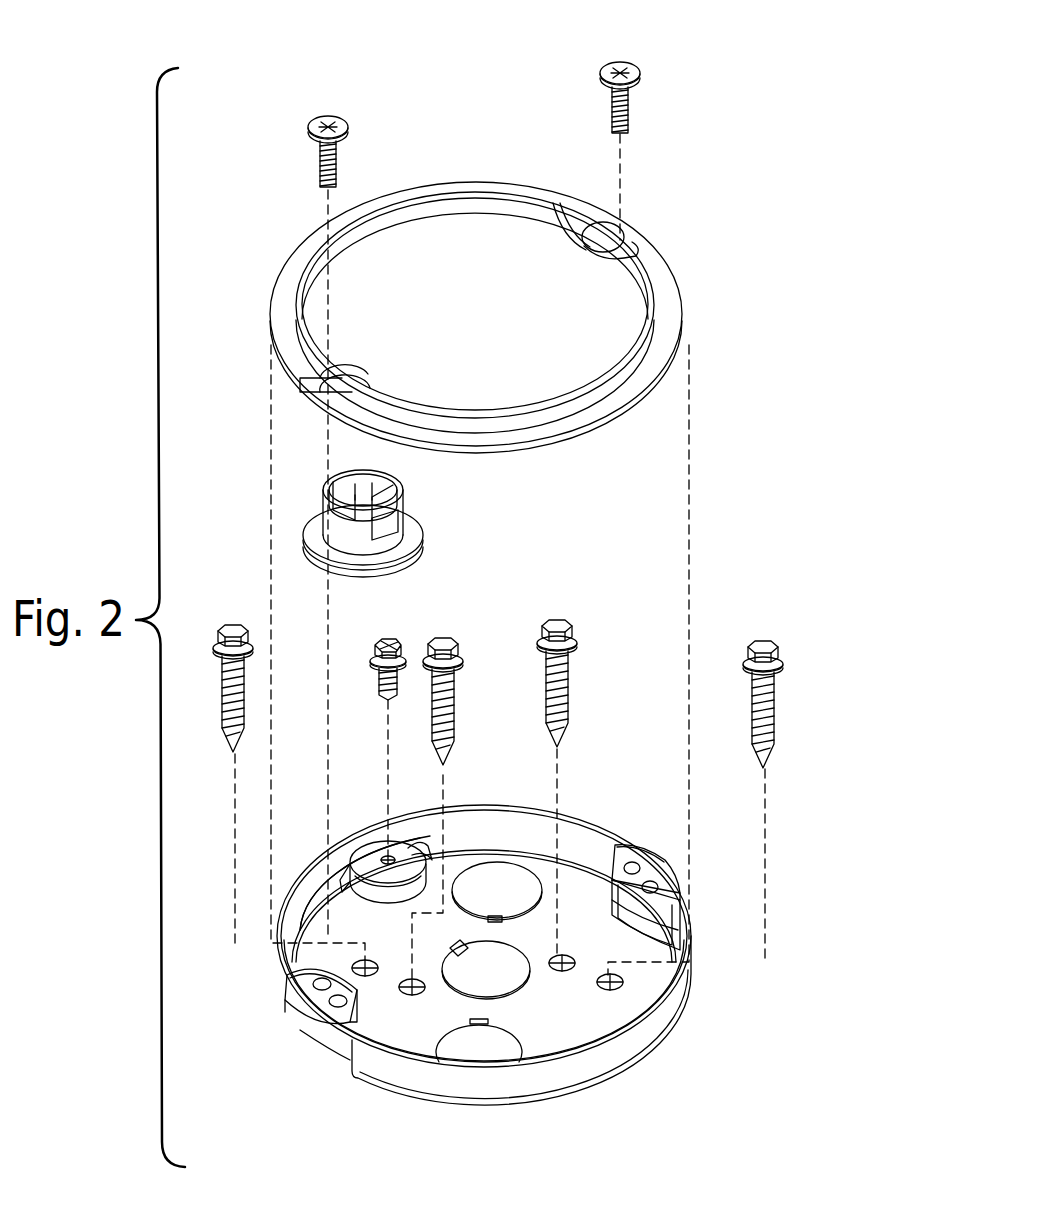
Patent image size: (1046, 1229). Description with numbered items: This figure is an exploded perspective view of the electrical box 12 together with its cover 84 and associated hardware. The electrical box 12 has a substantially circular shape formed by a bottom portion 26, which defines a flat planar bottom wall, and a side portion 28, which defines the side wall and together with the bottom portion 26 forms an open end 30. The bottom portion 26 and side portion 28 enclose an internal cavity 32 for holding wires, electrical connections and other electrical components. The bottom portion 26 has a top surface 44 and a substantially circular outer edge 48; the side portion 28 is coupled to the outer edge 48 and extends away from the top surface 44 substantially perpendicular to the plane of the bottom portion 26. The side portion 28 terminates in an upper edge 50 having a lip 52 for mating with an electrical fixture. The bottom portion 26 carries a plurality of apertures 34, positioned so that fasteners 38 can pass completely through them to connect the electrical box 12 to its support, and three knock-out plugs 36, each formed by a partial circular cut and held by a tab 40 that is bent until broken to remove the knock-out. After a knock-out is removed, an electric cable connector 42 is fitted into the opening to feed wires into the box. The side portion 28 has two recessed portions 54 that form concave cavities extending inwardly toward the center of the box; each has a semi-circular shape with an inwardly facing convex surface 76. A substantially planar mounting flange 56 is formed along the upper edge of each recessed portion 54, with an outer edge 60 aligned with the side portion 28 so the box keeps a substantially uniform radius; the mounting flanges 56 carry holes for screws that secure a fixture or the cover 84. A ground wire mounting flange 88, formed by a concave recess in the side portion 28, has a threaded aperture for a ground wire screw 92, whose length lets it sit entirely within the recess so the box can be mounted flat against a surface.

The electrical box 12 is at (480, 951).
The bottom portion 26 is at (462, 850).
The side portion 28 is at (456, 1085).
The open end 30 is at (566, 803).
The internal cavity 32 is at (368, 917).
The apertures 34 is at (366, 980).
The knock-out plugs 36 is at (482, 903).
The fasteners 38 is at (229, 617).
The tab 40 is at (460, 943).
The electric cable connector 42 is at (423, 530).
The top surface 44 is at (606, 1013).
The outer edge 48 is at (498, 848).
The upper edge 50 is at (437, 840).
The lip 52 is at (688, 990).
The recessed portions 54 is at (281, 1045).
The mounting flange 56 is at (312, 1000).
The outer edge 60 is at (320, 1016).
The inwardly facing convex surface 76 is at (625, 920).
The cover 84 is at (657, 249).
The ground wire mounting flange 88 is at (376, 857).
The ground wire screw 92 is at (368, 650).